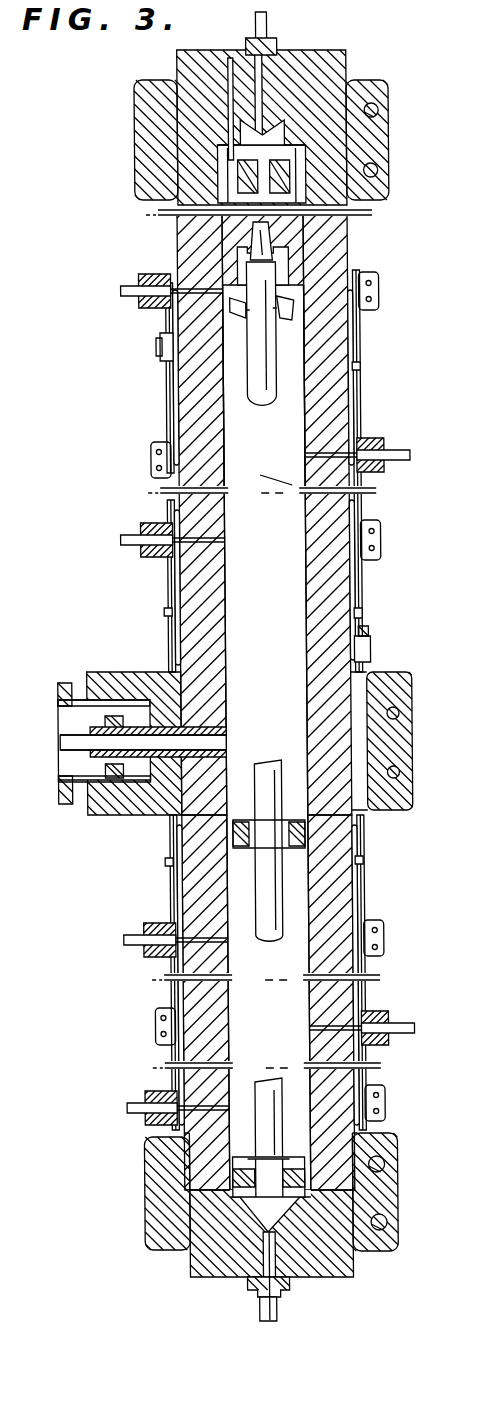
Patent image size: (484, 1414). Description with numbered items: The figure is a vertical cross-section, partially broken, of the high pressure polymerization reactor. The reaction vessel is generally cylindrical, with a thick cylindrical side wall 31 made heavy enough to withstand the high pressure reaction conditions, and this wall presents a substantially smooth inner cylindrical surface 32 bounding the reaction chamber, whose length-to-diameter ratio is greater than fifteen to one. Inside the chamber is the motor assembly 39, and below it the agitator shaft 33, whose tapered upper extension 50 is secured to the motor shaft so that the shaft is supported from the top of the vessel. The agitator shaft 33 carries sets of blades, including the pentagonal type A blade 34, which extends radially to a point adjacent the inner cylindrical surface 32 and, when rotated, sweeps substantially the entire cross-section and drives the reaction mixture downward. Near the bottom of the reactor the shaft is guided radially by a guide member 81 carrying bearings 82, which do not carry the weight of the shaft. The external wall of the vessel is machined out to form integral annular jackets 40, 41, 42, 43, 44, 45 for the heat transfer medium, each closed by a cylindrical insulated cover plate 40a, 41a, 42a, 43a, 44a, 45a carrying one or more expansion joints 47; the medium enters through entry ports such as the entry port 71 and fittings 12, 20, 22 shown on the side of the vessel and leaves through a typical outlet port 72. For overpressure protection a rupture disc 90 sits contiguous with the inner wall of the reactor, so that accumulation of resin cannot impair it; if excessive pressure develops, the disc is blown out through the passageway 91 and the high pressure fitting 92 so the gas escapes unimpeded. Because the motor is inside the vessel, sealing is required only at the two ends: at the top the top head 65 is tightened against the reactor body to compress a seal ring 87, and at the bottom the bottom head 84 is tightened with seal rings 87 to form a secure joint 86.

The inlet fitting 12 is at (120, 291).
The inlet fitting 20 is at (118, 945).
The inlet fitting 22 is at (120, 1108).
The cylindrical side wall 31 is at (226, 452).
The inner cylindrical surface 32 is at (307, 590).
The agitator shaft 33 is at (281, 388).
The type A agitator blade 34 is at (284, 322).
The motor assembly 39 is at (288, 230).
The annular jacket 40 is at (183, 398).
The insulated cover plate 40a is at (165, 382).
The annular jacket 41 is at (345, 395).
The insulated cover plate 41a is at (360, 340).
The annular jacket 42 is at (177, 636).
The insulated cover plate 42a is at (165, 580).
The annular jacket 43 is at (359, 598).
The insulated cover plate 43a is at (360, 580).
The annular jacket 44 is at (178, 890).
The insulated cover plate 44a is at (166, 826).
The annular jacket 45 is at (347, 905).
The insulated cover plate 45a is at (360, 885).
The expansion joint 47 is at (361, 367).
The tapered upper extension 50 is at (255, 232).
The top head 65 is at (307, 60).
The entry port 71 is at (157, 343).
The outlet port 72 is at (369, 648).
The guide member 81 is at (295, 1157).
The bearings 82 is at (284, 1199).
The bottom head 84 is at (377, 1192).
The joint 86 is at (192, 1198).
The seal ring 87 is at (306, 145).
The rupture disc 90 is at (208, 748).
The passageway 91 is at (206, 740).
The high pressure fitting 92 is at (96, 704).